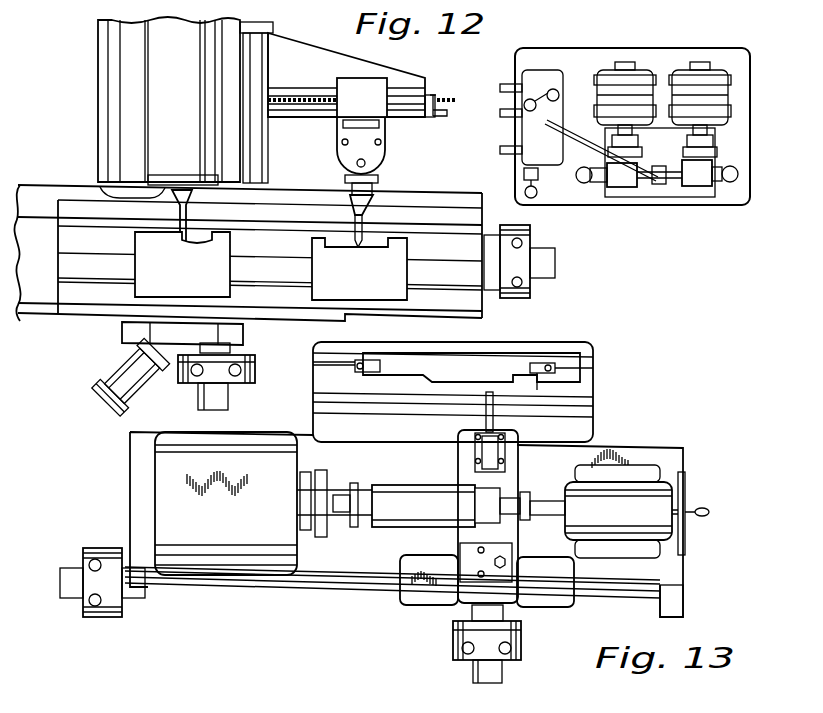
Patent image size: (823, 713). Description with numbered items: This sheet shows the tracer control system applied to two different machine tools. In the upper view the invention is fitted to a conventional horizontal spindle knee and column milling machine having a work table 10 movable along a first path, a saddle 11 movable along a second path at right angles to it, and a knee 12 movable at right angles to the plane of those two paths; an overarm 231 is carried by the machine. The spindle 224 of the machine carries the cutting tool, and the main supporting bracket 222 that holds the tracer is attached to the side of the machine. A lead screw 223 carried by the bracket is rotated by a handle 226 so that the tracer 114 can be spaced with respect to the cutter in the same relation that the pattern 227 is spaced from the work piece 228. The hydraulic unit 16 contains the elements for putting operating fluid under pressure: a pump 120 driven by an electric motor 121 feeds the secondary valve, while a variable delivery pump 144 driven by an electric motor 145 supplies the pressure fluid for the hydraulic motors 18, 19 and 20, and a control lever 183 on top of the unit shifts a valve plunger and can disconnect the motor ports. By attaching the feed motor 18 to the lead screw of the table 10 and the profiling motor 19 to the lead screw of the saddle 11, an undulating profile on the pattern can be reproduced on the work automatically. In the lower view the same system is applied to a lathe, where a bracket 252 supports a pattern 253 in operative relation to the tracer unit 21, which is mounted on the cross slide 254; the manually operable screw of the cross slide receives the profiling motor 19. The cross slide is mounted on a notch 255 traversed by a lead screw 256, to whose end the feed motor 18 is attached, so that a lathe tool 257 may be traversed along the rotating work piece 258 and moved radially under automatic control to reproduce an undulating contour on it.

In FIG. 12, the work table 10 is at (58, 207).
In FIG. 12, the saddle 11 is at (45, 313).
In FIG. 12, the knee 12 is at (122, 338).
In FIG. 12, the unit 16 is at (688, 206).
In FIG. 12, the feed motor 18 is at (540, 265).
In FIG. 13, the feed motor 18 is at (92, 550).
In FIG. 12, the profiling motor 19 is at (240, 360).
In FIG. 13, the profiling motor 19 is at (483, 668).
In FIG. 12, the hydraulic motor 20 is at (98, 393).
In FIG. 13, the tracer unit 21 is at (500, 447).
In FIG. 12, the tracer 114 is at (362, 224).
In FIG. 13, the tracer 114 is at (493, 408).
In FIG. 12, the pump 120 is at (697, 176).
In FIG. 12, the electric motor 121 is at (705, 88).
In FIG. 12, the variable delivery pump 144 is at (625, 178).
In FIG. 12, the electric motor 145 is at (630, 82).
In FIG. 12, the control lever 183 is at (565, 207).
In FIG. 12, the main supporting bracket 222 is at (294, 50).
In FIG. 12, the screw 223 is at (392, 100).
In FIG. 12, the spindle 224 is at (108, 196).
In FIG. 12, the handle 226 is at (446, 112).
In FIG. 12, the pattern 227 is at (410, 246).
In FIG. 12, the work piece 228 is at (135, 278).
In FIG. 12, the overarm 231 is at (167, 107).
In FIG. 13, the bracket 252 is at (588, 398).
In FIG. 13, the pattern 253 is at (547, 383).
In FIG. 13, the cross slide 254 is at (513, 485).
In FIG. 13, the notch 255 is at (550, 596).
In FIG. 13, the lead screw 256 is at (352, 590).
In FIG. 13, the lathe tool 257 is at (467, 538).
In FIG. 13, the work piece 258 is at (415, 510).